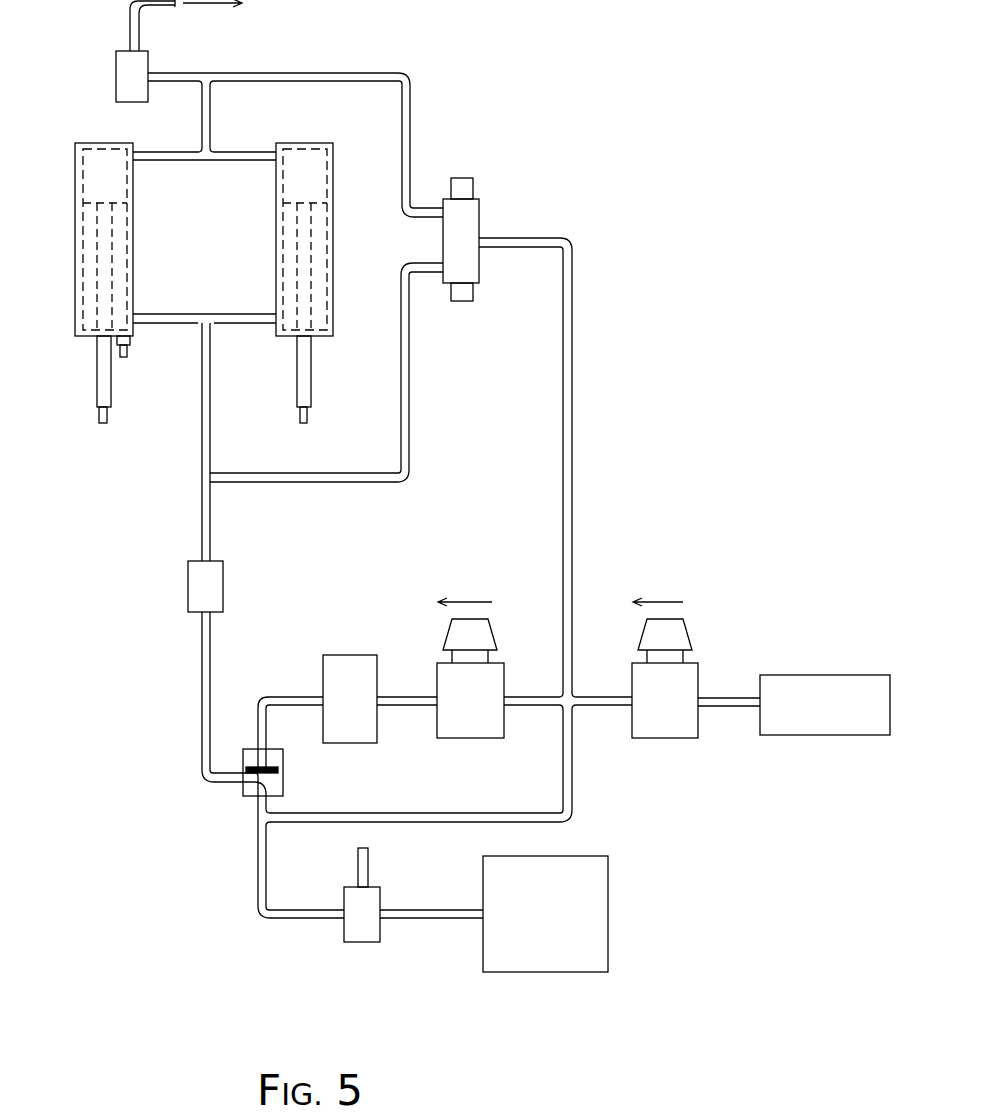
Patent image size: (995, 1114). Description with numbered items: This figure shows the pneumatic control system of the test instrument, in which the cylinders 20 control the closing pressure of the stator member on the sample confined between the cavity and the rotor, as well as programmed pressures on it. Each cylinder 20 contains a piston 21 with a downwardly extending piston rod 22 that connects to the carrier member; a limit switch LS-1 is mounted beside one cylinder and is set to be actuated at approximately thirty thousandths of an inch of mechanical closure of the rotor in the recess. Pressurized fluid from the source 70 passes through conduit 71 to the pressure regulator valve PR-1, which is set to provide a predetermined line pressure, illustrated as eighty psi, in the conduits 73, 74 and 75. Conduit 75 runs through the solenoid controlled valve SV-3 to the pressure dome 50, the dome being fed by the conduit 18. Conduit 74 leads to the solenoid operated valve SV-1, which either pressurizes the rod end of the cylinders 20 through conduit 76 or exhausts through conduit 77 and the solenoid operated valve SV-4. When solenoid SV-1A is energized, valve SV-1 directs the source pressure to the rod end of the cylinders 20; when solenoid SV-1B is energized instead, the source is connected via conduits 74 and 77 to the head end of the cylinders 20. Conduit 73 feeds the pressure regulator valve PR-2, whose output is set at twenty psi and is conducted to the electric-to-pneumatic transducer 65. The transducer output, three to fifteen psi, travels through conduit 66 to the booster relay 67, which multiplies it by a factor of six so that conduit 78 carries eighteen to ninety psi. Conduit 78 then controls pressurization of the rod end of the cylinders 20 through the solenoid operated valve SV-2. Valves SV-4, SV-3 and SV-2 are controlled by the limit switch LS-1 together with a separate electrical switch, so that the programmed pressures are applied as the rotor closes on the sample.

The conduit 18 is at (440, 918).
The cylinders 20 is at (104, 143).
The pistons 21 is at (110, 203).
The piston rods 22 is at (111, 400).
The pressure dome 50 is at (608, 900).
The electric-to-pneumatic transducer 65 is at (340, 657).
The conduit 66 is at (298, 697).
The booster relay 67 is at (283, 781).
The source 70 is at (822, 675).
The conduit 71 is at (722, 707).
The conduit 73 is at (532, 707).
The conduit 74 is at (572, 478).
The conduit 75 is at (572, 762).
The conduit 76 is at (409, 455).
The conduit 77 is at (411, 128).
The conduit 78 is at (200, 697).
The solenoid operated valve SV-1 is at (479, 228).
The solenoid SV-1A is at (470, 300).
The solenoid SV-1B is at (473, 190).
The solenoid operated valve SV-2 is at (223, 580).
The solenoid controlled valve SV-3 is at (344, 932).
The solenoid operated valve SV-4 is at (148, 62).
The limit switch LS-1 is at (128, 348).
The pressure regulator valve PR-1 is at (656, 651).
The pressure regulator valve PR-2 is at (463, 651).